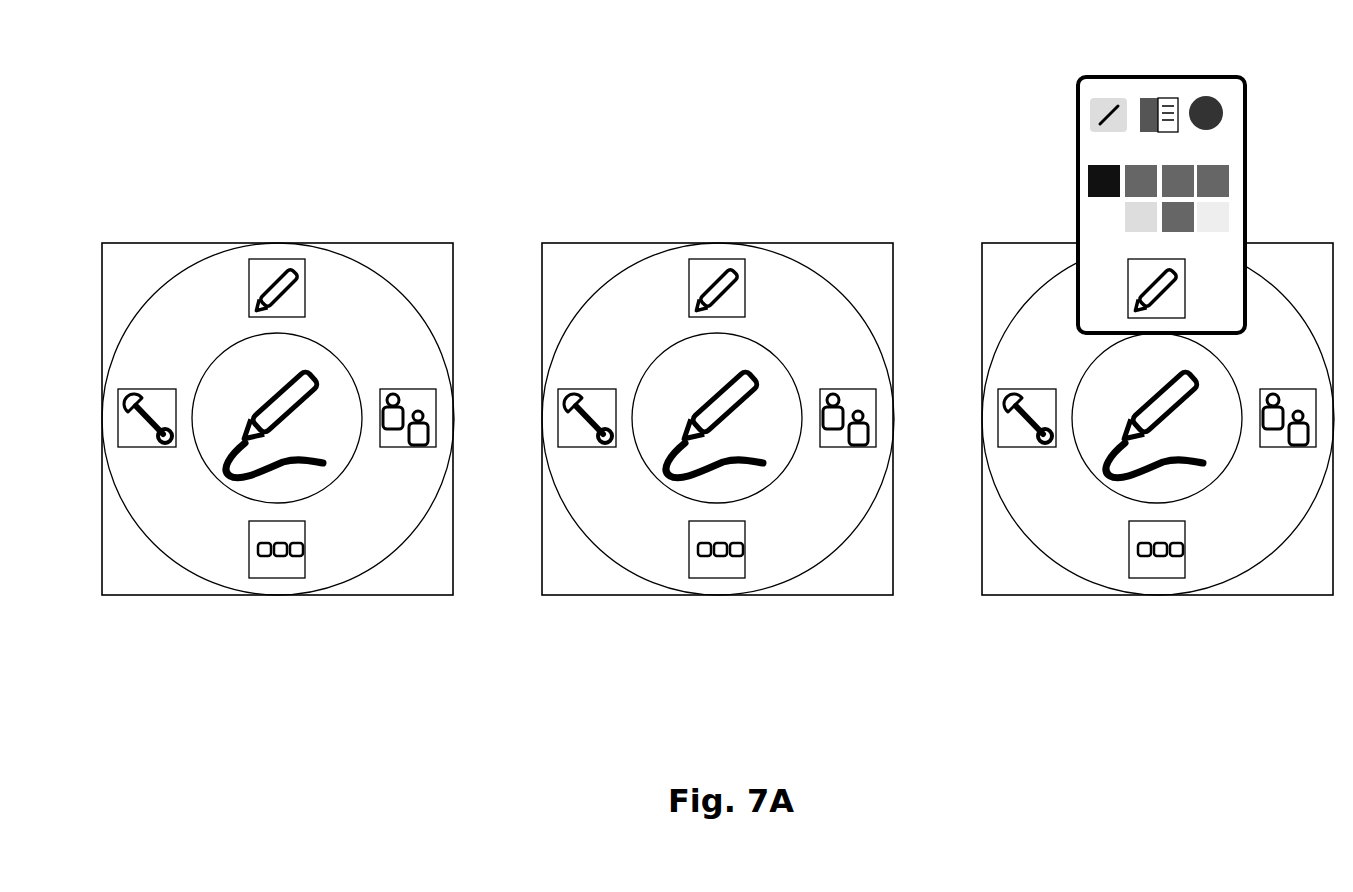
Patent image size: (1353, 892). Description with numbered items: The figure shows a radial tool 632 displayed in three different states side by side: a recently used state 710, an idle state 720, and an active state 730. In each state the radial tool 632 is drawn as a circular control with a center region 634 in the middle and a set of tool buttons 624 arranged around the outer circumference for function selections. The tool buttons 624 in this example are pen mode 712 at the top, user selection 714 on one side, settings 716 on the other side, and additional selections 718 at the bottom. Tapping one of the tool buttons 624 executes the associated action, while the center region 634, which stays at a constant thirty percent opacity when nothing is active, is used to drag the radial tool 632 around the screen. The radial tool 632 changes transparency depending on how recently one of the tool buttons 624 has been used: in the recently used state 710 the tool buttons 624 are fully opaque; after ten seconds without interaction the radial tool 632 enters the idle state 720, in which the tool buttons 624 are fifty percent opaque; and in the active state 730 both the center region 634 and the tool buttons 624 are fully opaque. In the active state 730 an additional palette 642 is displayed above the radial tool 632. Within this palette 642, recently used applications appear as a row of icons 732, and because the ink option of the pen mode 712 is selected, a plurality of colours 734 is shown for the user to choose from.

The recently used state 710 is at (689, 434).
The pen mode 712 is at (269, 277).
The user selection 714 is at (412, 410).
The settings 716 is at (120, 430).
The additional selections 718 is at (258, 562).
The tool buttons 624 is at (280, 434).
The radial tool 632 is at (1040, 245).
The center region 634 is at (238, 380).
The additional palette 642 is at (1155, 191).
The idle state 720 is at (722, 595).
The active state 730 is at (1155, 398).
The row of icons 732 is at (1227, 115).
The plurality of colours 734 is at (1213, 177).